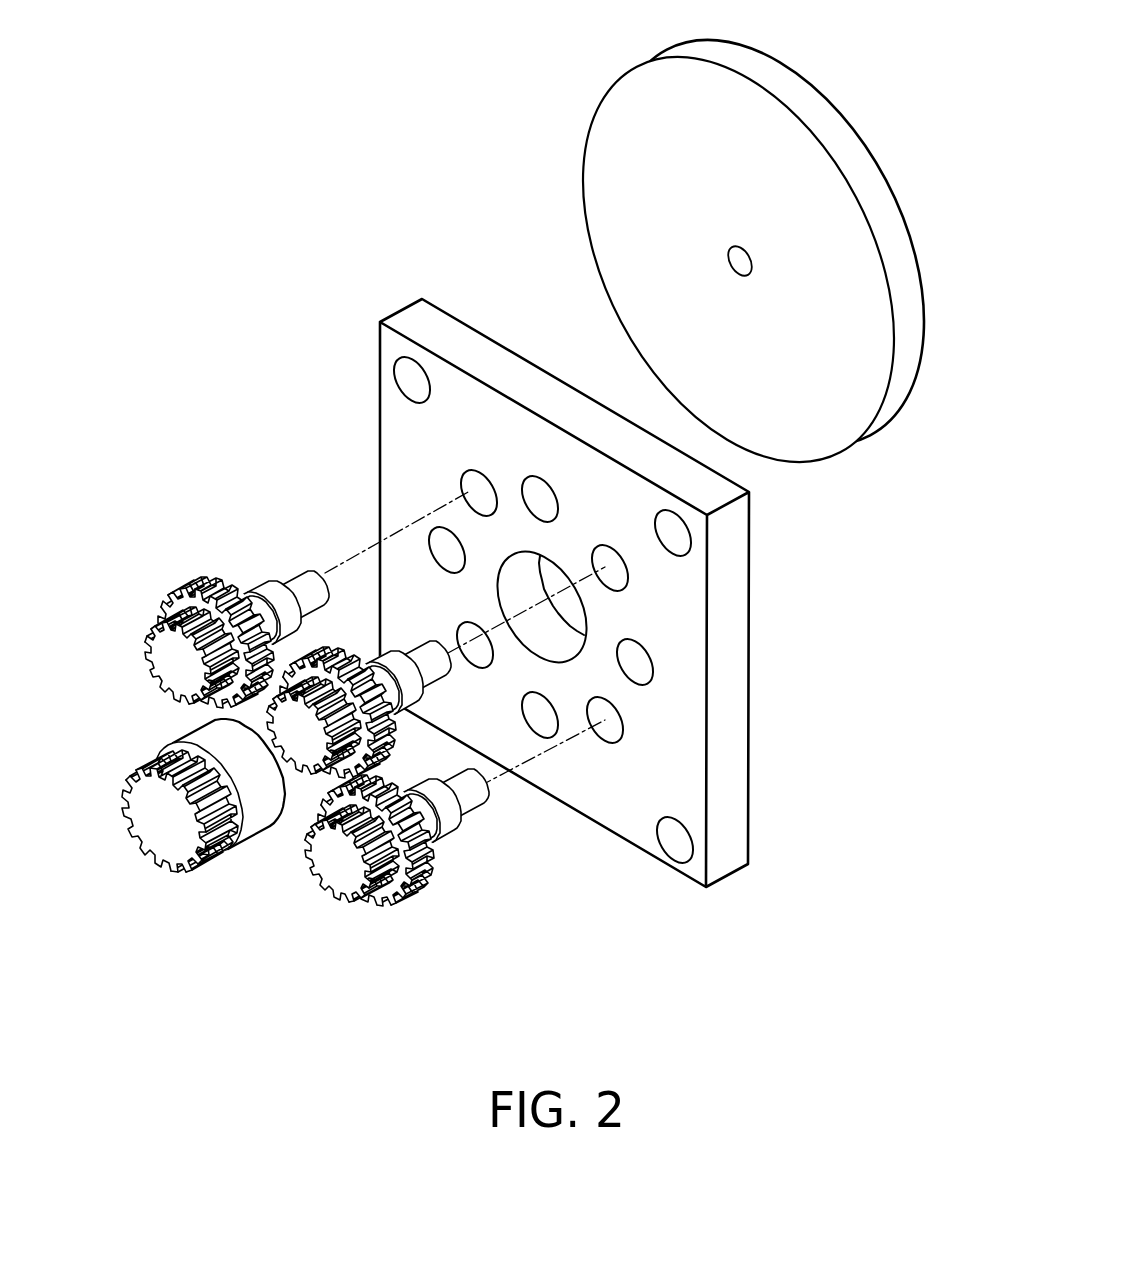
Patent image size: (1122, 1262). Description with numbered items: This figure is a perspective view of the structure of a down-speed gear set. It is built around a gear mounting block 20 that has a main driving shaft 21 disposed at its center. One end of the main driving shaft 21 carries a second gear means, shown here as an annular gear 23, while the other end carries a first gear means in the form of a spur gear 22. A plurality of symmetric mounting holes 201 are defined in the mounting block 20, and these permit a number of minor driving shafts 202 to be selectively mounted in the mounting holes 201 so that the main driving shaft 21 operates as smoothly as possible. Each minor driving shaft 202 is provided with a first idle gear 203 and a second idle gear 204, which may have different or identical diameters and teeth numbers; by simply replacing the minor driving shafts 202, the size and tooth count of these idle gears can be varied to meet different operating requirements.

The gear mounting block 20 is at (733, 637).
The mounting holes 201 is at (466, 490).
The minor driving shaft 202 is at (262, 582).
The first idle gear 203 is at (148, 670).
The second idle gear 204 is at (185, 575).
The main driving shaft 21 is at (297, 780).
The spur gear 22 is at (150, 801).
The annular gear 23 is at (788, 88).